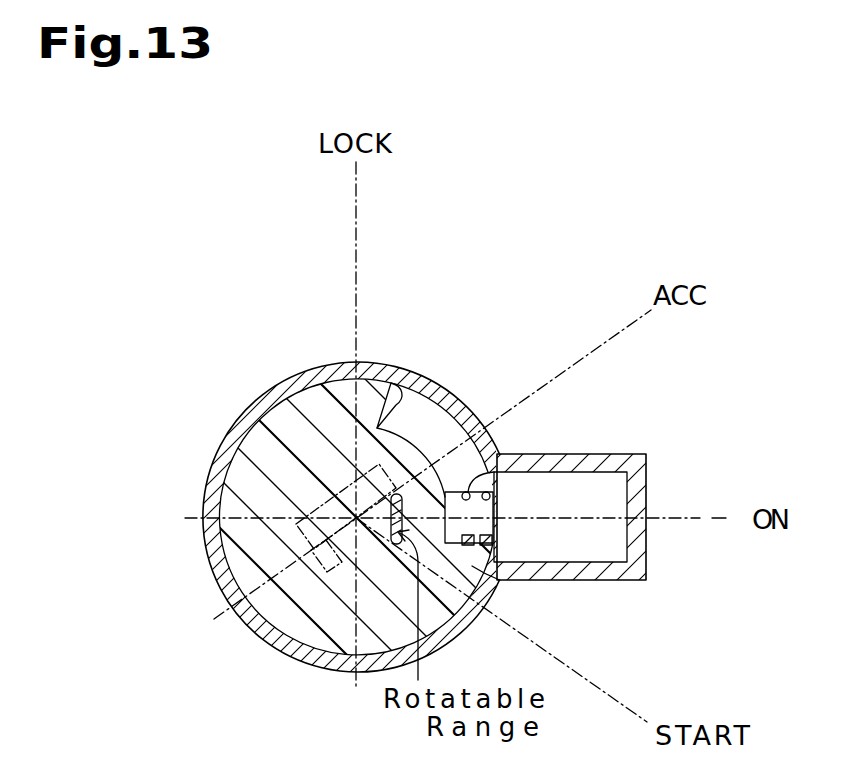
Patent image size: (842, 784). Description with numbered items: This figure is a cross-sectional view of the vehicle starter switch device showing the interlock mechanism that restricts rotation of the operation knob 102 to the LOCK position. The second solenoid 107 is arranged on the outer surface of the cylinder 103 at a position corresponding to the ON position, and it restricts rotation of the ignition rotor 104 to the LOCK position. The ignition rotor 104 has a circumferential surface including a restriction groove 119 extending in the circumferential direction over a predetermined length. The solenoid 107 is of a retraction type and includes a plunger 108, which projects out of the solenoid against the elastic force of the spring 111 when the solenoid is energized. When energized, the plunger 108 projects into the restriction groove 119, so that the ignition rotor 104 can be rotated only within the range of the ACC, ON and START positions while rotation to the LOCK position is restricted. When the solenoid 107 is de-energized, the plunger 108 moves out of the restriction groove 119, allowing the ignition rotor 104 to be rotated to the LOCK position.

The operation knob 102 is at (220, 576).
The cylinder 103 is at (306, 369).
The ignition rotor 104 is at (242, 470).
The second solenoid 107 is at (669, 416).
The plunger 108 is at (486, 577).
The spring 111 is at (497, 490).
The restriction groove 119 is at (392, 380).